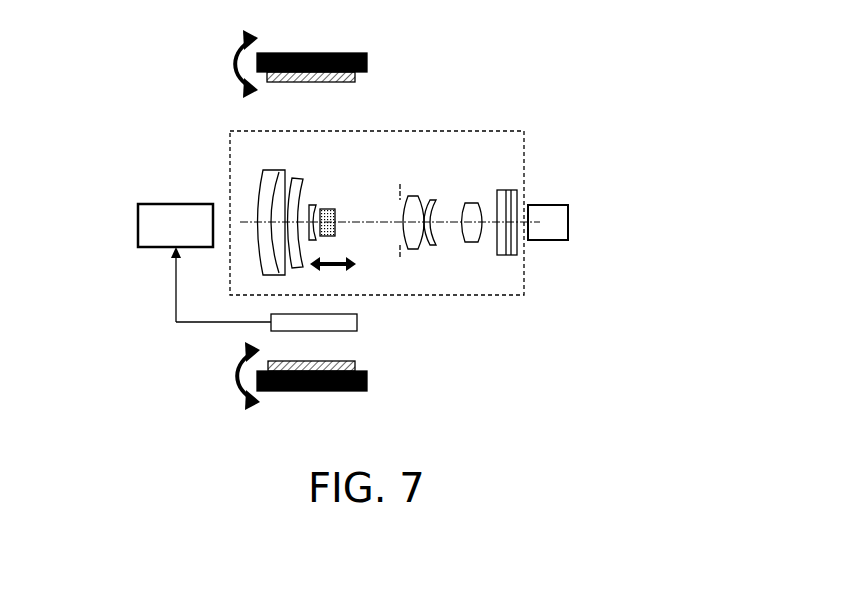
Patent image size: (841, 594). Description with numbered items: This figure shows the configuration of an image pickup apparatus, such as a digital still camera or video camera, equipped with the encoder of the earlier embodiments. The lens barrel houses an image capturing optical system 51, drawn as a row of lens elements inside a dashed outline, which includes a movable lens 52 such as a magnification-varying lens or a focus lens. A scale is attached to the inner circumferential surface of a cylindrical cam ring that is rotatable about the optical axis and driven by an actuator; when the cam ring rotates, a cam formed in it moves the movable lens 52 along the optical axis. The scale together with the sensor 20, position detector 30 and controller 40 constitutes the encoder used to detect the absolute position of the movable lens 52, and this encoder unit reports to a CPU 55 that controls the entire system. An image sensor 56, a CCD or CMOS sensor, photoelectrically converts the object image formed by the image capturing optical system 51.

The image capturing optical system 51 is at (247, 168).
The movable lens 52 is at (332, 210).
The CPU 55 is at (156, 235).
The image sensor 56 is at (555, 228).
The sensor 20 is at (324, 329).
The position detector 30 is at (324, 329).
The controller 40 is at (357, 322).